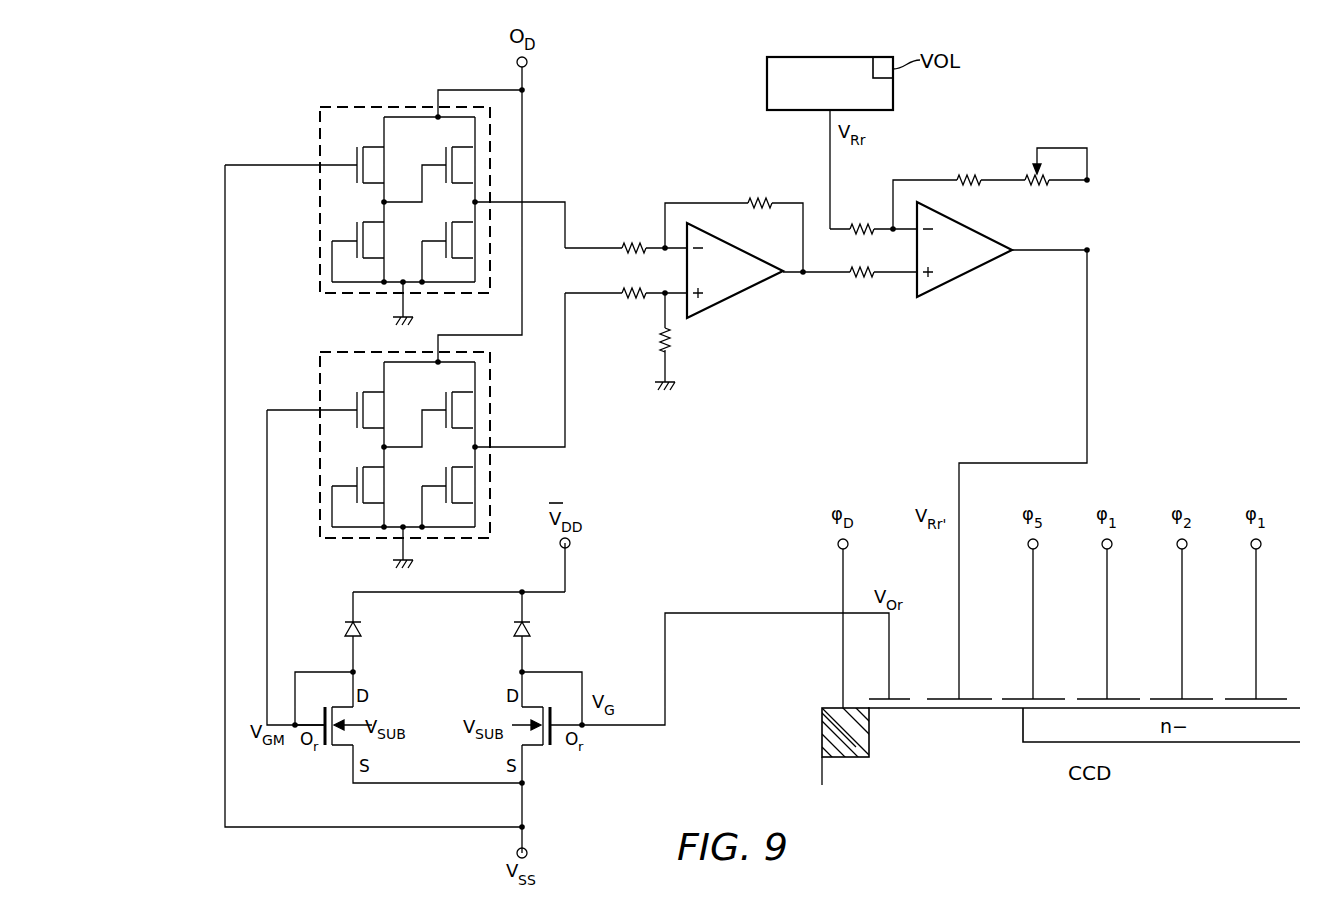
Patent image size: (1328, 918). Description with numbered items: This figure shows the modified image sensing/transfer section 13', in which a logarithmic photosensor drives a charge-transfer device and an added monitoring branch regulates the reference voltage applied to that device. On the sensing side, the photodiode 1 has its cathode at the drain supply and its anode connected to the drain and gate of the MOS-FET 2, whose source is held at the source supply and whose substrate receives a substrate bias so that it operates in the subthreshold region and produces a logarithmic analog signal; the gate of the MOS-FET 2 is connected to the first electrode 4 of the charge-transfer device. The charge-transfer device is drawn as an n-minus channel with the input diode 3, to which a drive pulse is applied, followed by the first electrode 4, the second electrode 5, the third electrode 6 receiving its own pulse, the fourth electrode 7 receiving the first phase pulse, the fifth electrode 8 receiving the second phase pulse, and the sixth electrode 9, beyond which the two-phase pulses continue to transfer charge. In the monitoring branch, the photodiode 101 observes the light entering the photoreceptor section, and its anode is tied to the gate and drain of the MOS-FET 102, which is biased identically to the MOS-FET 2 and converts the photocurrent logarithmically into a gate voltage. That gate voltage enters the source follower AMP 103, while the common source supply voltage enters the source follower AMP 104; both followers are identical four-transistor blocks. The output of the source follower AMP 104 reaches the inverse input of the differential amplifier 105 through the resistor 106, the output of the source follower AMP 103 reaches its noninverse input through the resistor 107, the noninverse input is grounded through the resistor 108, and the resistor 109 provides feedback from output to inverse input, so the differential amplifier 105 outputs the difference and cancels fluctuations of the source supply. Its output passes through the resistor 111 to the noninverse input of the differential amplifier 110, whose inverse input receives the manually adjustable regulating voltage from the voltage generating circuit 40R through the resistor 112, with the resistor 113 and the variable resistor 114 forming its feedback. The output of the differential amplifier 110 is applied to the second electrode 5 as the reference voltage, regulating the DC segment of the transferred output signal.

The source follower AMP 104 is at (347, 106).
The source follower AMP 103 is at (320, 375).
The resistor 106 is at (628, 243).
The resistor 107 is at (630, 298).
The resistor 108 is at (670, 340).
The resistor 109 is at (760, 198).
The differential amplifier 105 is at (736, 300).
The resistor 111 is at (862, 278).
The resistor 112 is at (860, 224).
The resistor 113 is at (970, 175).
The variable resistor 114 is at (1036, 188).
The differential amplifier 110 is at (962, 278).
The voltage generating circuit 40R is at (767, 86).
The image sensing/transfer section 13' is at (1070, 474).
The photodiode 101 is at (345, 630).
The photodiode 1 is at (530, 630).
The MOS-FET 102 is at (345, 752).
The n-channel MOS-FET 2 is at (523, 752).
The input diode 3 is at (822, 727).
The first electrode 4 is at (898, 697).
The second electrode 5 is at (978, 697).
The third electrode 6 is at (1053, 697).
The fourth electrode 7 is at (1128, 697).
The fifth electrode 8 is at (1201, 697).
The sixth electrode 9 is at (1276, 697).